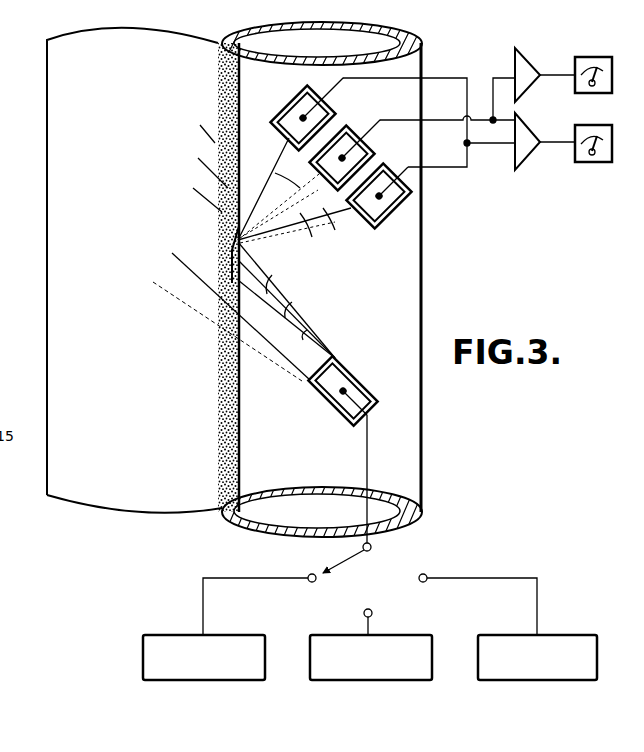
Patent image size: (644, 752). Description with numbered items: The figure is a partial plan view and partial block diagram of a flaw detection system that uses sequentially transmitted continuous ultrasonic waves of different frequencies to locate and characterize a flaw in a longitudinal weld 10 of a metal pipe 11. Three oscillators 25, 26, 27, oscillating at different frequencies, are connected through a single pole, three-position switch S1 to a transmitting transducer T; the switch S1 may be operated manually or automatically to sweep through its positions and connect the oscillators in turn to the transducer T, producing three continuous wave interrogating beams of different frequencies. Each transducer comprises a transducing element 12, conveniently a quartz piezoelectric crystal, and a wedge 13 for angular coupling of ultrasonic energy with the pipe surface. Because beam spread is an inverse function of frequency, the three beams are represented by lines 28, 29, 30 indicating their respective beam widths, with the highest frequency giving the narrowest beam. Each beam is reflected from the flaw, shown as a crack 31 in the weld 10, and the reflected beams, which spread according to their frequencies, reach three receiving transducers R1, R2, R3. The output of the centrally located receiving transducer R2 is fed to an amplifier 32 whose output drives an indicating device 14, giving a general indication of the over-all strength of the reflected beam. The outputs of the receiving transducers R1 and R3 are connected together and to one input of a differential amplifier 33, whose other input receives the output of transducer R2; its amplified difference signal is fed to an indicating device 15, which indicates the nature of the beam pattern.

The longitudinal weld 10 is at (218, 360).
The metal pipe 11 is at (45, 213).
The transducing element 12 is at (299, 103).
The wedge 13 is at (332, 103).
The indicating device I4 14 is at (595, 57).
The indicating device I5 15 is at (595, 125).
The oscillator 25 is at (190, 683).
The oscillator 26 is at (362, 683).
The oscillator 27 is at (531, 683).
The interrogating beam line 28 is at (280, 353).
The interrogating beam line 29 is at (257, 333).
The interrogating beam line 30 is at (205, 313).
The crack 31 is at (220, 263).
The amplifier 32 is at (523, 52).
The differential amplifier 33 is at (532, 125).
The receiving transducer R1 is at (359, 228).
The receiving transducer R2 is at (355, 128).
The receiving transducer R3 is at (282, 105).
The transmitting transducer T is at (329, 409).
The single pole, three-position switch S1 is at (342, 556).